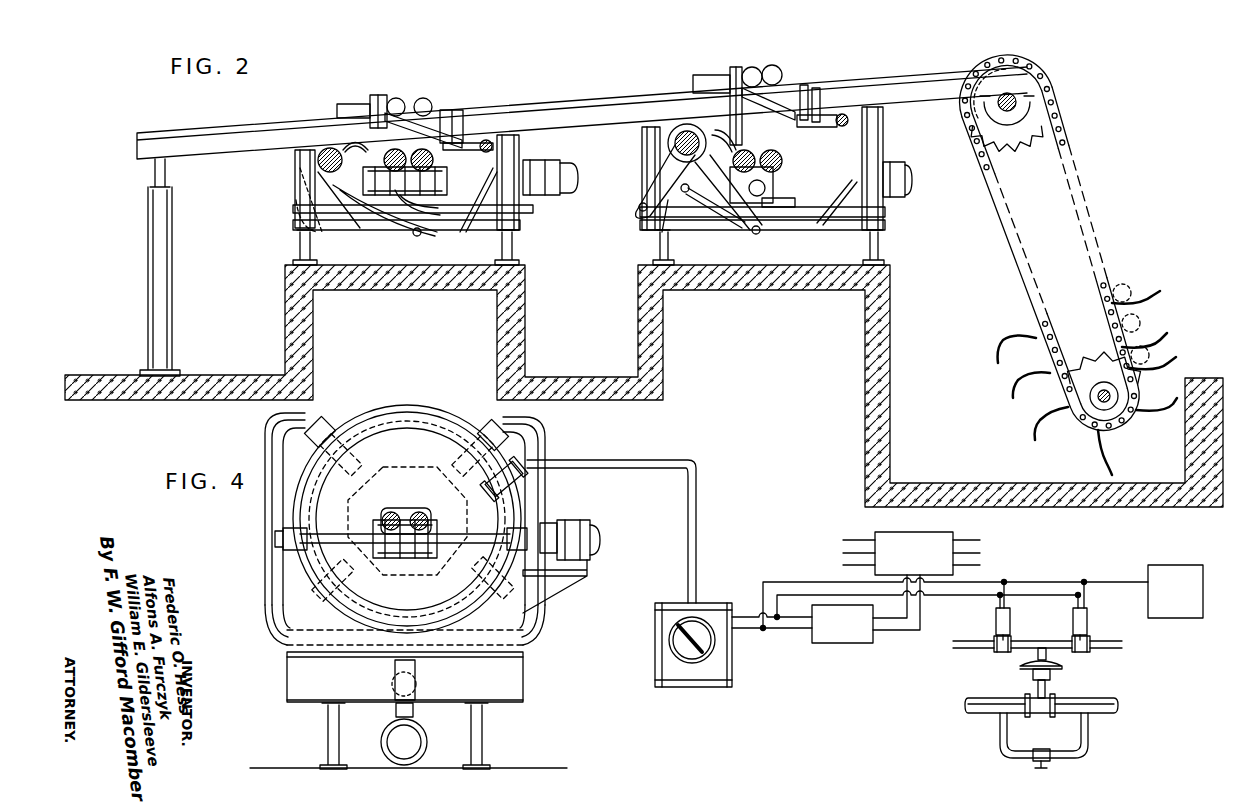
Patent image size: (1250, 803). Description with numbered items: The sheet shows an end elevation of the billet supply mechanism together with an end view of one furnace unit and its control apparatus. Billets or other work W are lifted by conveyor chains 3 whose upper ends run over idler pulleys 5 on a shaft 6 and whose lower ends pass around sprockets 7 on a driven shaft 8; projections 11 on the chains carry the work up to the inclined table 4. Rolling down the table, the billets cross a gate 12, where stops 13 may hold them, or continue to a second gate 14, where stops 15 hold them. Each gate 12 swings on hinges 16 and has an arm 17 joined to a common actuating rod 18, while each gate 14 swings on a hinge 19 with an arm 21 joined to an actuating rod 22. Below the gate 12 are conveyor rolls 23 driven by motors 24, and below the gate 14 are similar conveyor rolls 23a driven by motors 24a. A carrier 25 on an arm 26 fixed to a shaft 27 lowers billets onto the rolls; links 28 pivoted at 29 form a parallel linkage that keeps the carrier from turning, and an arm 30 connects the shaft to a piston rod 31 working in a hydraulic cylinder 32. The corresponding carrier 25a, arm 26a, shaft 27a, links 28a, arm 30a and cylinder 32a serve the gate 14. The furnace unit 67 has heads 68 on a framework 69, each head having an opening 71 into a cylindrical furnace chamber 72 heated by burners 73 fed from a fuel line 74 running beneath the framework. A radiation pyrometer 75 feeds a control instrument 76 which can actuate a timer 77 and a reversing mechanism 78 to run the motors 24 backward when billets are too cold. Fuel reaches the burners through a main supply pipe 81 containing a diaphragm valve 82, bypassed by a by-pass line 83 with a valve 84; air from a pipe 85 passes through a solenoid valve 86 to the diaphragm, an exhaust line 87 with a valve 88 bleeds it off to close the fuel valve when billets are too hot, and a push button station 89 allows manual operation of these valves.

In FIG. 2, the conveyor chains 3 is at (1097, 296).
In FIG. 2, the inclined table 4 is at (593, 100).
In FIG. 2, the idler pulleys 5 is at (1020, 145).
In FIG. 2, the shaft 6 is at (1007, 112).
In FIG. 2, the sprockets 7 is at (1097, 358).
In FIG. 2, the shaft 8 is at (1100, 392).
In FIG. 2, the projections 11 is at (1157, 296).
In FIG. 2, the gate 12 is at (787, 90).
In FIG. 2, the stops 13 is at (735, 75).
In FIG. 2, the gates 14 is at (432, 118).
In FIG. 2, the stops 15 is at (374, 95).
In FIG. 2, the hinges 16 is at (825, 100).
In FIG. 2, the arm 17 is at (832, 124).
In FIG. 2, the actuating rod 18 is at (843, 115).
In FIG. 2, the hinge 19 is at (452, 110).
In FIG. 2, the arms 21 is at (466, 150).
In FIG. 2, the actuating rod 22 is at (487, 142).
In FIG. 2, the conveyor rolls 23 is at (771, 150).
In FIG. 4, the conveyor rolls 23 is at (405, 560).
In FIG. 2, the conveyor rolls 23a is at (438, 188).
In FIG. 2, the motors 24 is at (890, 168).
In FIG. 4, the motors 24 is at (568, 520).
In FIG. 2, the motors 24a is at (555, 165).
In FIG. 2, the carrier 25 is at (778, 228).
In FIG. 2, the carrier 25a is at (440, 232).
In FIG. 2, the arm 26 is at (738, 148).
In FIG. 2, the arm 26a is at (362, 145).
In FIG. 2, the shaft 27 is at (690, 128).
In FIG. 2, the shaft 27a is at (328, 148).
In FIG. 2, the links 28 is at (722, 225).
In FIG. 2, the links 28a is at (365, 232).
In FIG. 2, the pivot 29 is at (692, 228).
In FIG. 2, the arm 30 is at (645, 181).
In FIG. 2, the arm 30a is at (297, 190).
In FIG. 2, the piston rod 31 is at (675, 228).
In FIG. 2, the cylinder 32 is at (818, 228).
In FIG. 2, the cylinder 32a is at (458, 235).
In FIG. 2, the work W is at (396, 148).
In FIG. 4, the work W is at (419, 514).
In FIG. 4, the furnace unit 67 is at (430, 399).
In FIG. 4, the heads 68 is at (378, 410).
In FIG. 4, the framework 69 is at (520, 679).
In FIG. 4, the opening 71 is at (408, 509).
In FIG. 4, the furnace chamber 72 is at (412, 467).
In FIG. 4, the burners 73 is at (345, 500).
In FIG. 4, the fuel line 74 is at (430, 738).
In FIG. 4, the radiation pyrometer 75 is at (505, 466).
In FIG. 4, the control instrument 76 is at (675, 605).
In FIG. 4, the timer 77 is at (855, 643).
In FIG. 4, the reversing mechanism 78 is at (910, 540).
In FIG. 4, the main supply pipe 81 is at (1000, 700).
In FIG. 4, the valve 82 is at (1050, 685).
In FIG. 4, the by-pass line 83 is at (1085, 730).
In FIG. 4, the valve 84 is at (1035, 773).
In FIG. 4, the pipe 85 is at (1112, 646).
In FIG. 4, the solenoid valve 86 is at (1089, 620).
In FIG. 4, the exhaust line 87 is at (968, 642).
In FIG. 4, the valve 88 is at (1011, 620).
In FIG. 4, the push button station 89 is at (1175, 572).